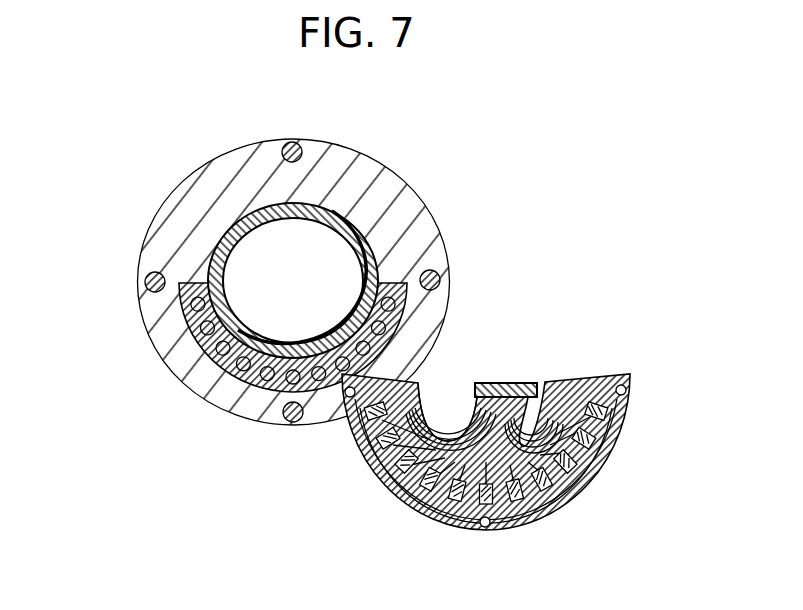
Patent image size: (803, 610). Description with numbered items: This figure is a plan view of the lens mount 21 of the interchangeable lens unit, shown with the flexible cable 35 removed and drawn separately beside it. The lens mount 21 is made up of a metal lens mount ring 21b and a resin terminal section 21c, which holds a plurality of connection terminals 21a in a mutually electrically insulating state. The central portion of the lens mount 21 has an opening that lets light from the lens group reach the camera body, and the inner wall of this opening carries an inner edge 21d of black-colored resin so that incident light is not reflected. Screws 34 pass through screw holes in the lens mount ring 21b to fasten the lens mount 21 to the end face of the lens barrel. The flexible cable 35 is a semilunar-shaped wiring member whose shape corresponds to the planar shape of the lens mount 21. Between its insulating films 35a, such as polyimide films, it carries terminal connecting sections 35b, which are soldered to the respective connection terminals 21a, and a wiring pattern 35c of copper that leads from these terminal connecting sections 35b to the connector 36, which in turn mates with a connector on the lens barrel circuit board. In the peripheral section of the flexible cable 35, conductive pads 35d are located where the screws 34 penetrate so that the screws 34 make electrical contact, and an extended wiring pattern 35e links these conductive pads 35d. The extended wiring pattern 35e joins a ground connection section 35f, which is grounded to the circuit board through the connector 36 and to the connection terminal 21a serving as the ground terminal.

The lens mount 21 is at (297, 273).
The connection terminals 21a is at (187, 313).
The lens mount ring 21b is at (423, 233).
The terminal section 21c is at (385, 345).
The inner edge 21d is at (340, 212).
The screws 34 is at (292, 142).
The flexible cable 35 is at (479, 443).
The insulating films 35a is at (625, 410).
The terminal connecting sections 35b is at (363, 468).
The wiring pattern 35c is at (412, 406).
The conductive pad 35d is at (624, 380).
The extended wiring pattern 35e is at (567, 500).
The ground connection section 35f is at (600, 460).
The connector 36 is at (530, 380).